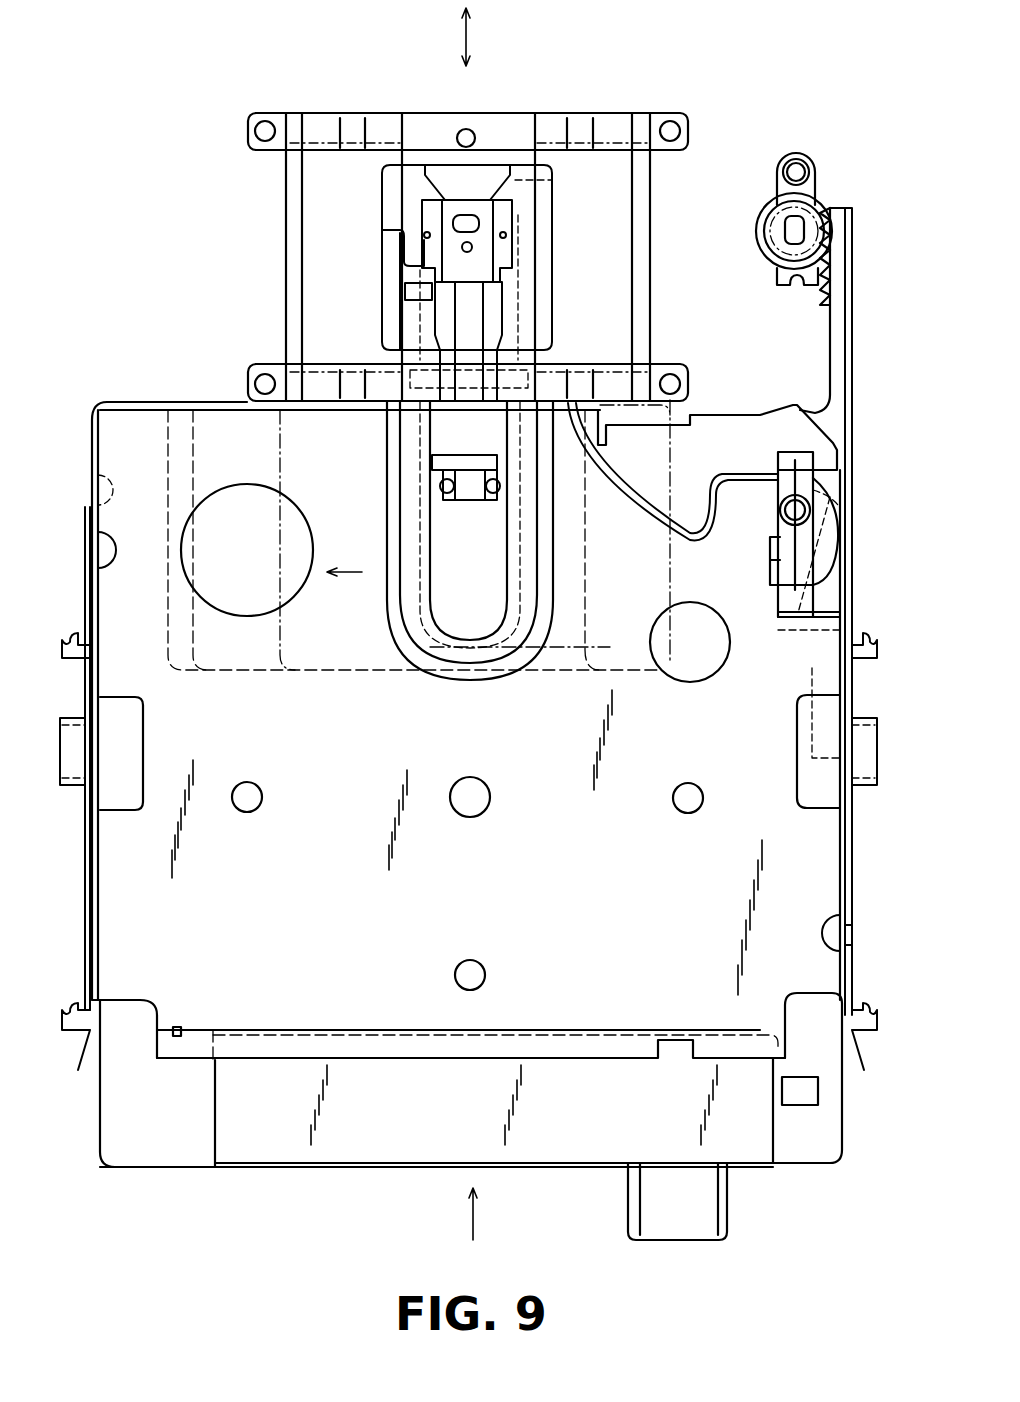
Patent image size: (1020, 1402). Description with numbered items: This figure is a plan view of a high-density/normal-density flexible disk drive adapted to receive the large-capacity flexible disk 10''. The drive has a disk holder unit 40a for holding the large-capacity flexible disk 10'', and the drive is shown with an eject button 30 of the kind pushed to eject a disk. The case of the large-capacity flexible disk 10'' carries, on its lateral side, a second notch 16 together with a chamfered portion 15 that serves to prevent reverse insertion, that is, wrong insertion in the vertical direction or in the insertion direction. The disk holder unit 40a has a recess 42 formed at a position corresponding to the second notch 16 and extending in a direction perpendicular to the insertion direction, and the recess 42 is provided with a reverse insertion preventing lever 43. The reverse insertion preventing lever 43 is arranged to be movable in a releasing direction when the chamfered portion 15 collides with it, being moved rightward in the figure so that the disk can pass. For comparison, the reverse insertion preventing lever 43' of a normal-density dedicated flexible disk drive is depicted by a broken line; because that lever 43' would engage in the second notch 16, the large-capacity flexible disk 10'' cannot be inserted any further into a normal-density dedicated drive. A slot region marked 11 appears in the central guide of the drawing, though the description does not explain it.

The slot 11 is at (483, 581).
The chamfered portion 15 is at (818, 437).
The second notch 16 is at (825, 600).
The reverse insertion preventing lever 43 is at (746, 571).
The recess 42 is at (778, 620).
The reverse insertion preventing lever of the normal-density dedicated flexible disk 43' is at (783, 738).
The disk holder unit 40a is at (570, 1060).
The large-capacity flexible disk 10'' is at (252, 1195).
The eject button 30 is at (718, 1208).